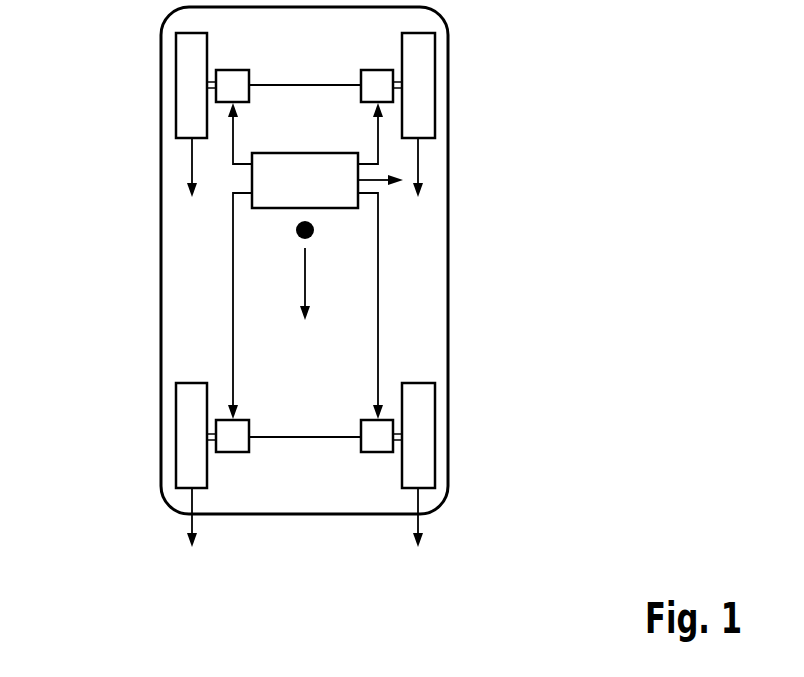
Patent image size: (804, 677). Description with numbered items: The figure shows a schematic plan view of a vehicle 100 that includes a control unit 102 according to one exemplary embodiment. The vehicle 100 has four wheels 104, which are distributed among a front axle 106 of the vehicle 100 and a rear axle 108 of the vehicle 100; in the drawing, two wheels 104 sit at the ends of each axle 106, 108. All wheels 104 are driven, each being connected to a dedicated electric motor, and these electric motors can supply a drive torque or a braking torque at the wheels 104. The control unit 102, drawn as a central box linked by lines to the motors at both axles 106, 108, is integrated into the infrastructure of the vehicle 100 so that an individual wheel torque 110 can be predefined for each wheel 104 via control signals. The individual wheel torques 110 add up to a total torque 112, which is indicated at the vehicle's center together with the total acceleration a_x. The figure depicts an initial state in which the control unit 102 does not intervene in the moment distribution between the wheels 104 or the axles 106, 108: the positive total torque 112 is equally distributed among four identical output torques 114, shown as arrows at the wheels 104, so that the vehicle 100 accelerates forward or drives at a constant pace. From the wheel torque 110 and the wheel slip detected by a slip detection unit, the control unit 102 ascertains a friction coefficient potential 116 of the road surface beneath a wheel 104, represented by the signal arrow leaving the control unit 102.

The vehicle 100 is at (448, 31).
The control unit 102 is at (329, 195).
The wheel 104 is at (176, 82).
The front axle 106 is at (304, 437).
The rear axle 108 is at (305, 85).
The individual wheel torque 110 is at (302, 342).
The total torque 112 is at (302, 277).
The output torque 114 is at (192, 158).
The friction coefficient potential 116 is at (383, 185).